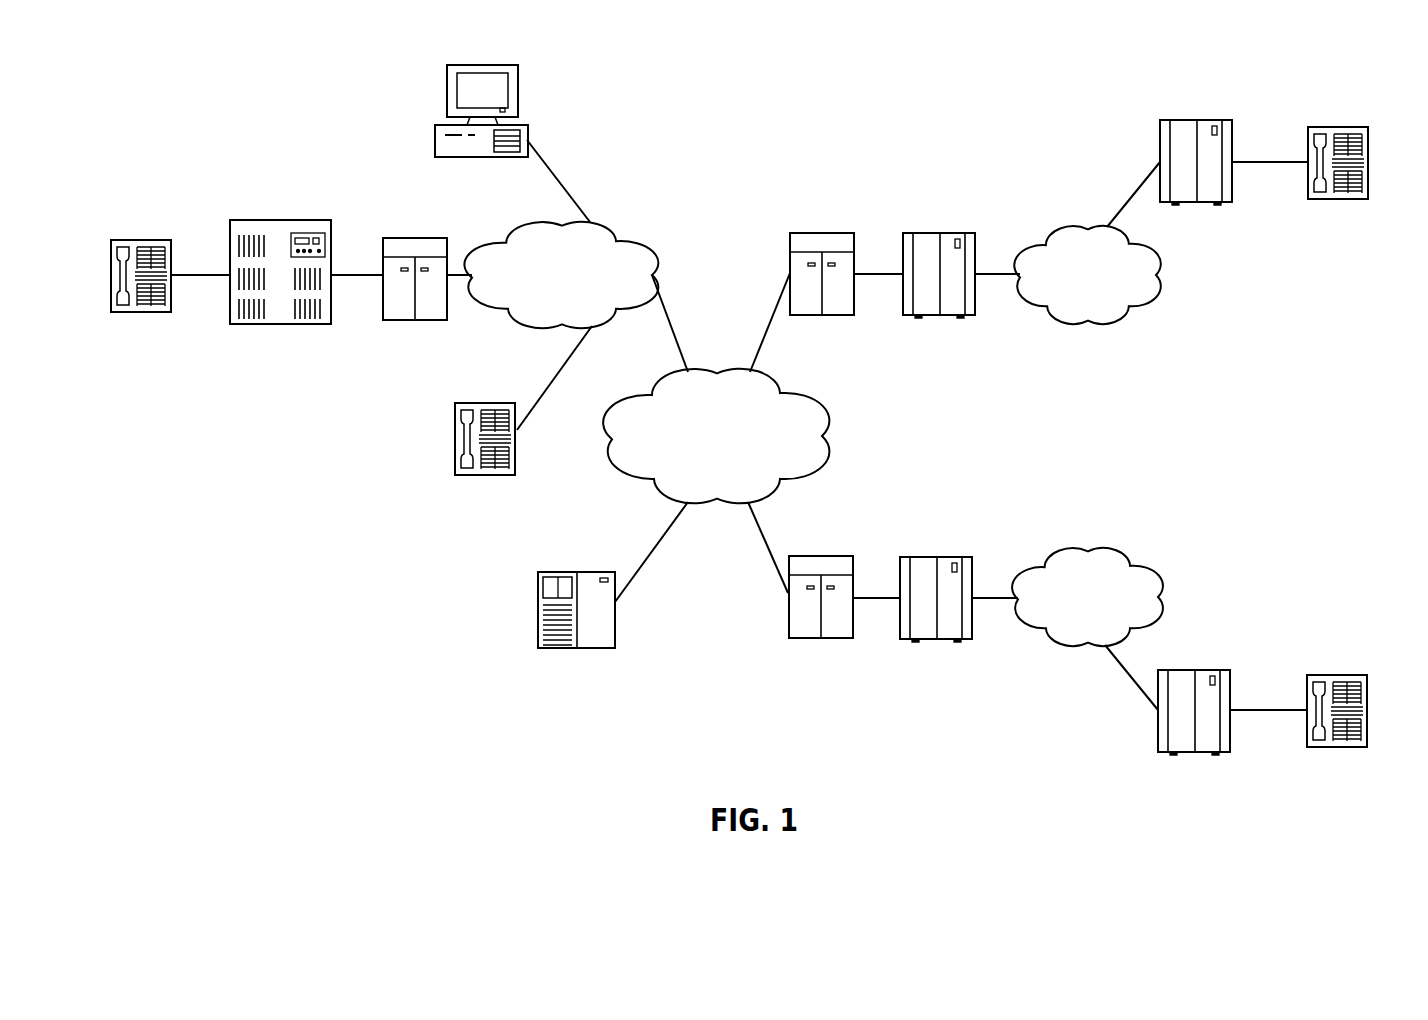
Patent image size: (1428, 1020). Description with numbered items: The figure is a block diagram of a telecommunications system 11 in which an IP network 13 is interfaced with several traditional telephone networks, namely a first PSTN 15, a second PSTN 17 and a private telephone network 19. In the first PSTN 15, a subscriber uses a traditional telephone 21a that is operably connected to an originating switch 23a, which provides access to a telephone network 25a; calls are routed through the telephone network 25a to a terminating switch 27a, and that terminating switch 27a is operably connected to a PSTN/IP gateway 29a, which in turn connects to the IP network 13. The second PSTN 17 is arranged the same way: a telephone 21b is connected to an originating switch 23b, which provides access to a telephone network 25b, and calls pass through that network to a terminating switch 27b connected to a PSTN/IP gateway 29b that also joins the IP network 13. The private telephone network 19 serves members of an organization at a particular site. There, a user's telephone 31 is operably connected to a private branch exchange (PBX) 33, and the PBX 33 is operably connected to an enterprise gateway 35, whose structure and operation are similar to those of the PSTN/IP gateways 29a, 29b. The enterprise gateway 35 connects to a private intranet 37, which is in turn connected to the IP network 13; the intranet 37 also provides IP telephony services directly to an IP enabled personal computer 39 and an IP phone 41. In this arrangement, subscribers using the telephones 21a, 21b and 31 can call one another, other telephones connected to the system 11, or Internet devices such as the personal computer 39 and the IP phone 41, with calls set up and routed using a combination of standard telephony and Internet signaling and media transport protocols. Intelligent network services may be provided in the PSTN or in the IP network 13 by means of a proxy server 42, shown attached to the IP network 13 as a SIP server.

The telecommunications system 11 is at (748, 208).
The IP network 13 is at (822, 440).
The first PSTN 15 is at (1143, 350).
The second PSTN 17 is at (1143, 529).
The private telephone network 19 is at (258, 191).
The telephone 21a is at (1338, 127).
The telephone 21b is at (1337, 675).
The originating switch 23a is at (1192, 120).
The originating switch 23b is at (1190, 670).
The telephone network 25a is at (1155, 283).
The telephone network 25b is at (1153, 592).
The terminating switch 27a is at (938, 233).
The terminating switch 27b is at (934, 557).
The PSTN/IP gateway 29a is at (814, 233).
The PSTN/IP gateway 29b is at (813, 556).
The telephone 31 is at (160, 240).
The private branch exchange (PBX) 33 is at (309, 220).
The enterprise gateway 35 is at (425, 238).
The private intranet 37 is at (614, 228).
The personal computer 39 is at (518, 97).
The IP phone 41 is at (490, 403).
The proxy server 42 is at (586, 572).